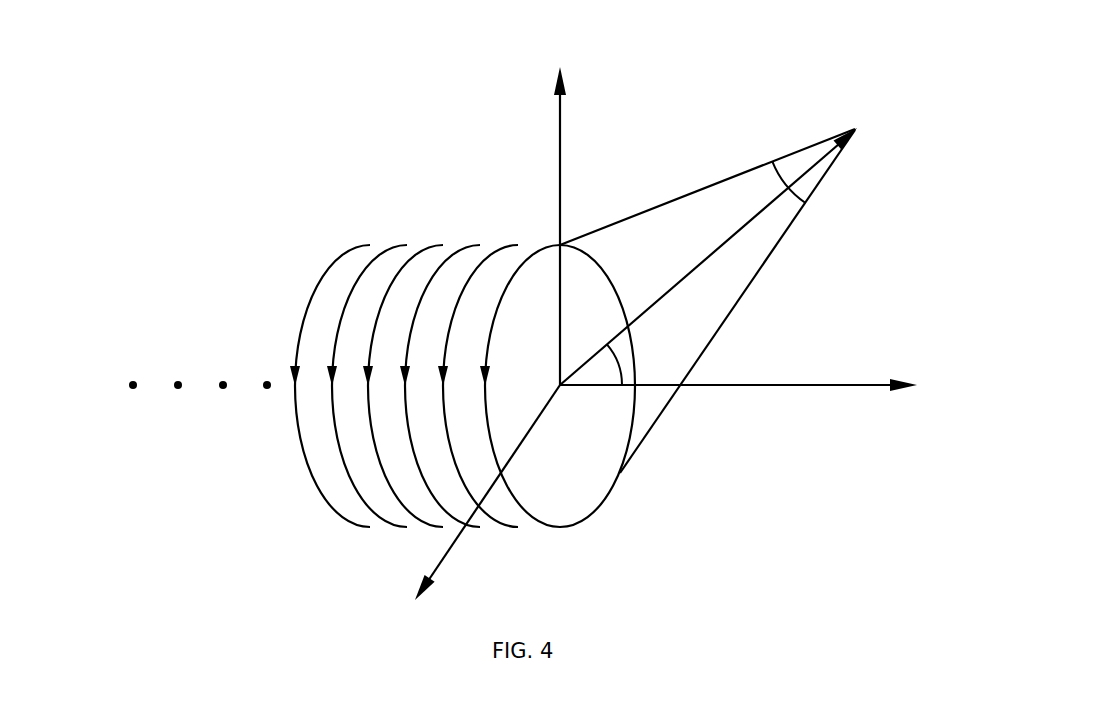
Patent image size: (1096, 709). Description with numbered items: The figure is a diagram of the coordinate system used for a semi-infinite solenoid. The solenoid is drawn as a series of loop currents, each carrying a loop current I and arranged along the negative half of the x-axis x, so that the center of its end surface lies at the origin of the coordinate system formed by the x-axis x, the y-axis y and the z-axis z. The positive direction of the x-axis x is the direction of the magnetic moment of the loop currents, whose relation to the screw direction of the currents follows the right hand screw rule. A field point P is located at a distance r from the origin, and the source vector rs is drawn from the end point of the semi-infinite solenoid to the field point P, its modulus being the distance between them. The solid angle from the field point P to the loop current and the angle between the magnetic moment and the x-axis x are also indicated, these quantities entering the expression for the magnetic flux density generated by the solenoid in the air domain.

The loop current I is at (382, 386).
The x-axis x is at (738, 412).
The y-axis y is at (576, 222).
The z-axis z is at (487, 494).
The vector r_s rs is at (676, 246).
The field point P is at (728, 289).